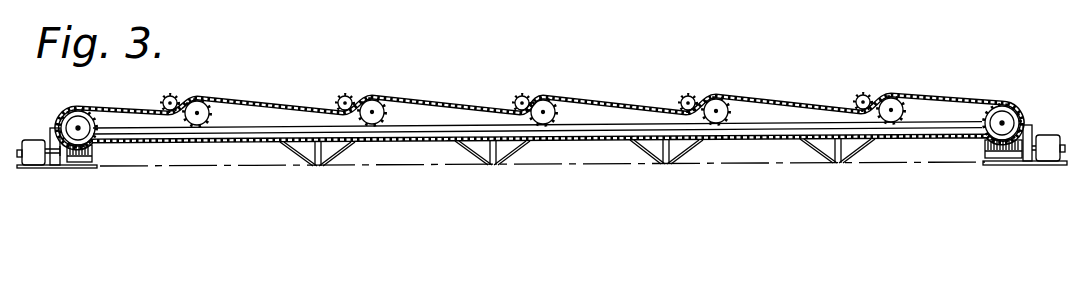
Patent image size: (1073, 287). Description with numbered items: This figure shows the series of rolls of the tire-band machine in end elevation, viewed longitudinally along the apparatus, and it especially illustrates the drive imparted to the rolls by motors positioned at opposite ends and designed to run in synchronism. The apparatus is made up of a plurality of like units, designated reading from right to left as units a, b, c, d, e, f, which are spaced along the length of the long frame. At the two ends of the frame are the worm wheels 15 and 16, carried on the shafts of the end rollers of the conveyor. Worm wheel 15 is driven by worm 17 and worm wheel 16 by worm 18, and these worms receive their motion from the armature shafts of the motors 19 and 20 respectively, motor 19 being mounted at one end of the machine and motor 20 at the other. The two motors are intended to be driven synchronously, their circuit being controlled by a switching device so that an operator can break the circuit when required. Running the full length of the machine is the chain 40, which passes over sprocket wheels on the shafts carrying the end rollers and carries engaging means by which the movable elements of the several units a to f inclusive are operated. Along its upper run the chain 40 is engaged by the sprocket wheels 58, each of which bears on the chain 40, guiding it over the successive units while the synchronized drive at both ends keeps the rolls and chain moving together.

The worm wheel 15 is at (73, 109).
The worm wheel 16 is at (1019, 109).
The worm 17 is at (83, 162).
The worm 18 is at (1000, 164).
The motor 19 is at (34, 161).
The motor 20 is at (1048, 161).
The chain 40 is at (663, 104).
The sprocket wheel 58 is at (517, 97).
The unit a is at (960, 75).
The unit b is at (797, 73).
The unit c is at (622, 79).
The unit d is at (446, 79).
The unit e is at (292, 83).
The unit f is at (142, 83).